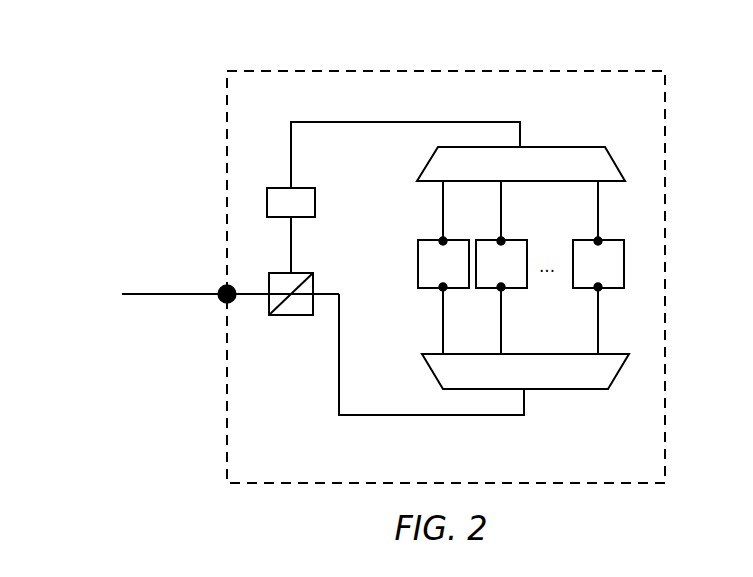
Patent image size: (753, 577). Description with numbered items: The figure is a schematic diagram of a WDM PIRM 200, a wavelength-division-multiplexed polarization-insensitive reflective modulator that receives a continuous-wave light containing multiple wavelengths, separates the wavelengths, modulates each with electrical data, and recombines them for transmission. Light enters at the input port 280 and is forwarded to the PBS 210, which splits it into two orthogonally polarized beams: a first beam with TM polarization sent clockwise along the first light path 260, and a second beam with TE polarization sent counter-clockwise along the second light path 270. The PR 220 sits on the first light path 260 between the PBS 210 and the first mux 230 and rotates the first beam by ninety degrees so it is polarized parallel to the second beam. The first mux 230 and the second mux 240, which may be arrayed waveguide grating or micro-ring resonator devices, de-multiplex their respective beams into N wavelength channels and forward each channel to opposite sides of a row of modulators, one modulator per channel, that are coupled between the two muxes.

The WDM PIRM 200 is at (315, 70).
The PBS 210 is at (292, 317).
The PR 220 is at (291, 202).
The first mux 230 is at (521, 164).
The second mux 240 is at (525, 371).
The first light path 260 is at (400, 121).
The second light path 270 is at (400, 416).
The input port 280 is at (220, 303).